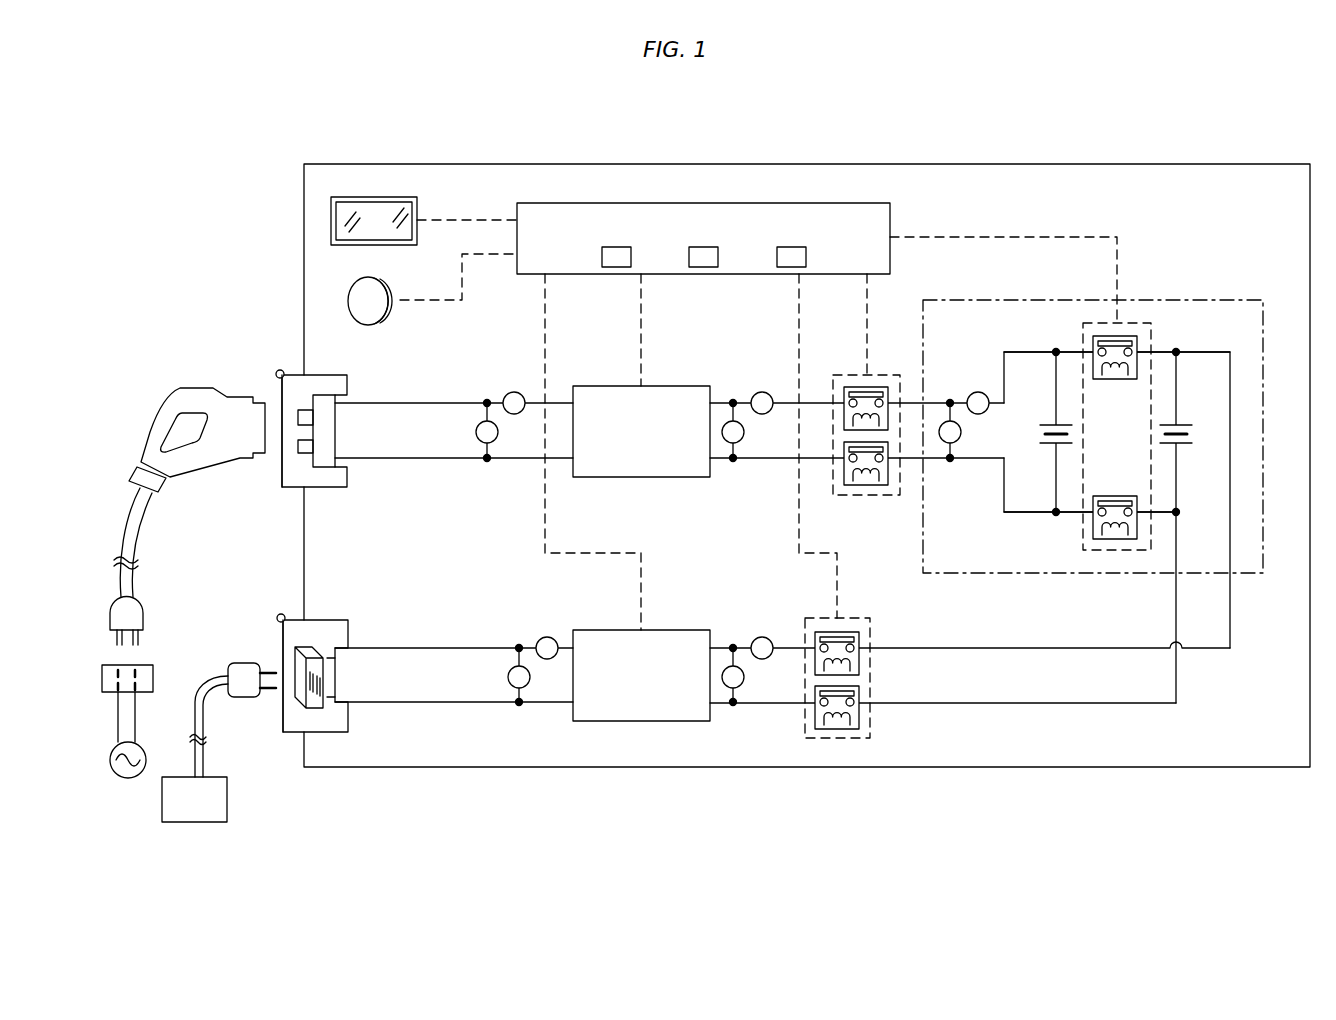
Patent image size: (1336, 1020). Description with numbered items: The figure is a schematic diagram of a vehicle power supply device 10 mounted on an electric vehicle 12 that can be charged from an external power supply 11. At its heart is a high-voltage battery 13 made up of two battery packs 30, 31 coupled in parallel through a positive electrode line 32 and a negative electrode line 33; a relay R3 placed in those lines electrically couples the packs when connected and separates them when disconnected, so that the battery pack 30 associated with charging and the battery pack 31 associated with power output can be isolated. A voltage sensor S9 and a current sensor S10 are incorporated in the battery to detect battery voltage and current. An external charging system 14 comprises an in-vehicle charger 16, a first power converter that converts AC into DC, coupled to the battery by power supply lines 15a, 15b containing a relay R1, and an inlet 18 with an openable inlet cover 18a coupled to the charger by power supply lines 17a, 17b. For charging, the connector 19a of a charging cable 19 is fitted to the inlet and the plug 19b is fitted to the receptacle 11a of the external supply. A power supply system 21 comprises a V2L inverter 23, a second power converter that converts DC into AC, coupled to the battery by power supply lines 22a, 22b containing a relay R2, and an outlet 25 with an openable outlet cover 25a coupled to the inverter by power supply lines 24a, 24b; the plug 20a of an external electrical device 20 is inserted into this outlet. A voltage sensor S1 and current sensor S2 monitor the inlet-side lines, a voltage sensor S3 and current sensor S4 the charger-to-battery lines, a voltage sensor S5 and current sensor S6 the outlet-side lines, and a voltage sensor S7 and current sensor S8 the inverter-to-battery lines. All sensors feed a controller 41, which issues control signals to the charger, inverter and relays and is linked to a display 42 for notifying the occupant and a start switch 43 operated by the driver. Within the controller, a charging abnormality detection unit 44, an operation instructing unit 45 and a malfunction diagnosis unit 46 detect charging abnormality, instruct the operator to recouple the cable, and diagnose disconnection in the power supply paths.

The vehicle power supply device 10 is at (304, 269).
The external power supply 11 is at (157, 742).
The receptacle 11a is at (153, 670).
The electric vehicle 12 is at (216, 136).
The high-voltage battery 13 is at (1093, 463).
The external charging system 14 is at (608, 368).
The power supply line 15a is at (821, 403).
The power supply line 15b is at (762, 458).
The in-vehicle charger 16 is at (681, 386).
The power supply line 17a is at (432, 403).
The power supply line 17b is at (421, 458).
The inlet 18 is at (301, 383).
The inlet cover 18a is at (282, 478).
The charging cable 19 is at (186, 483).
The connector 19a is at (197, 388).
The plug 19b is at (143, 597).
The external electrical device 20 is at (244, 723).
The plug 20a is at (247, 663).
The power supply system 21 is at (576, 742).
The power supply line 22a is at (934, 648).
The power supply line 22b is at (923, 703).
The V2L inverter 23 is at (681, 630).
The power supply line 24a is at (404, 648).
The power supply line 24b is at (413, 702).
The outlet 25 is at (300, 621).
The outlet cover 25a is at (282, 722).
The battery pack 30 is at (1045, 425).
The battery pack 31 is at (1186, 425).
The positive electrode line 32 is at (1035, 352).
The negative electrode line 33 is at (1040, 512).
The controller 41 is at (703, 198).
The display 42 is at (370, 197).
The start switch 43 is at (372, 310).
The charging abnormality detection unit 44 is at (632, 260).
The operation instructing unit 45 is at (719, 260).
The malfunction diagnosis unit 46 is at (807, 260).
The voltage sensor S1 is at (498, 432).
The current sensor S2 is at (514, 392).
The voltage sensor S3 is at (744, 432).
The current sensor S4 is at (762, 392).
The voltage sensor S5 is at (508, 677).
The current sensor S6 is at (547, 637).
The voltage sensor S7 is at (744, 677).
The current sensor S8 is at (762, 637).
The voltage sensor S9 is at (961, 432).
The current sensor S10 is at (978, 392).
The relay R1 is at (880, 375).
The relay R2 is at (850, 618).
The relay R3 is at (1155, 300).